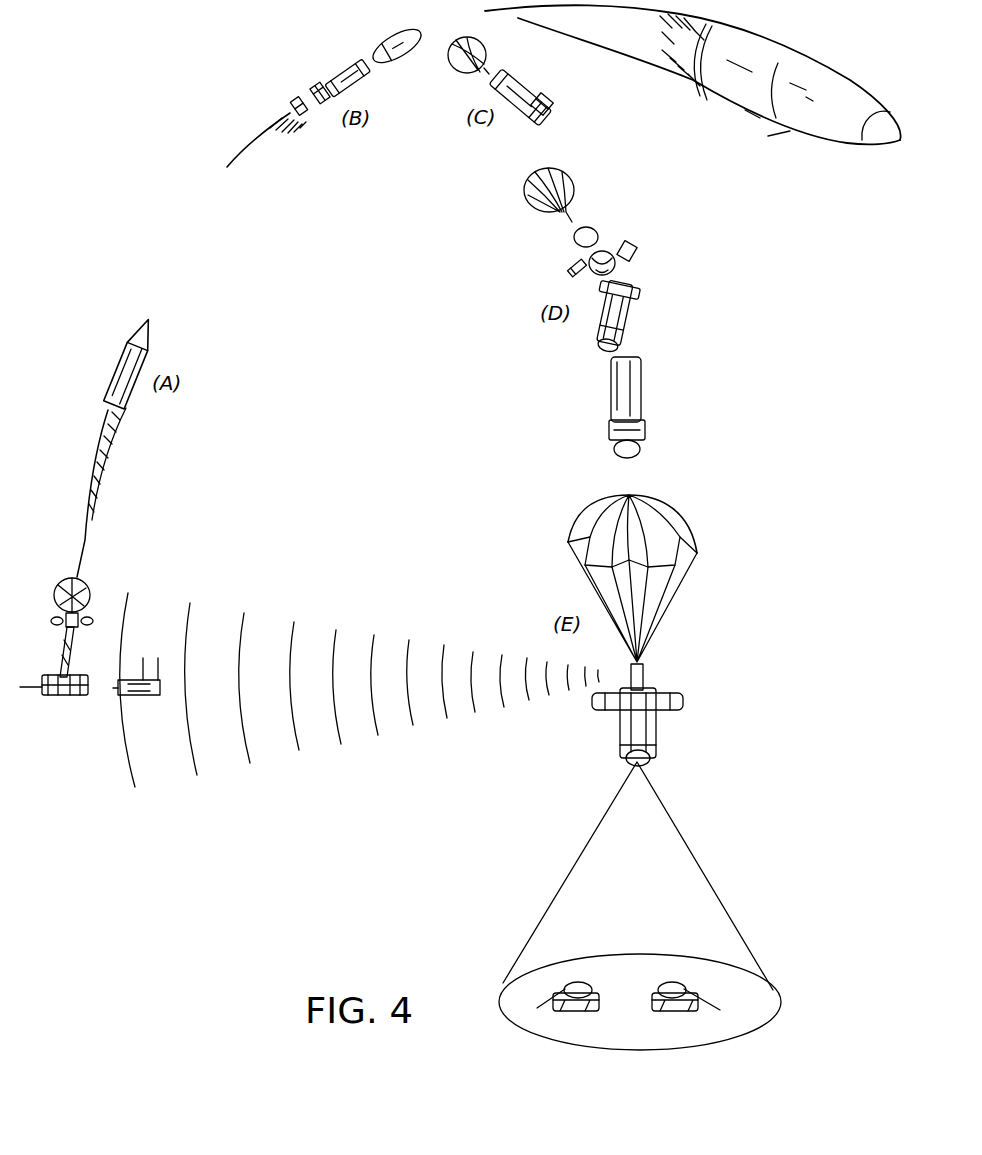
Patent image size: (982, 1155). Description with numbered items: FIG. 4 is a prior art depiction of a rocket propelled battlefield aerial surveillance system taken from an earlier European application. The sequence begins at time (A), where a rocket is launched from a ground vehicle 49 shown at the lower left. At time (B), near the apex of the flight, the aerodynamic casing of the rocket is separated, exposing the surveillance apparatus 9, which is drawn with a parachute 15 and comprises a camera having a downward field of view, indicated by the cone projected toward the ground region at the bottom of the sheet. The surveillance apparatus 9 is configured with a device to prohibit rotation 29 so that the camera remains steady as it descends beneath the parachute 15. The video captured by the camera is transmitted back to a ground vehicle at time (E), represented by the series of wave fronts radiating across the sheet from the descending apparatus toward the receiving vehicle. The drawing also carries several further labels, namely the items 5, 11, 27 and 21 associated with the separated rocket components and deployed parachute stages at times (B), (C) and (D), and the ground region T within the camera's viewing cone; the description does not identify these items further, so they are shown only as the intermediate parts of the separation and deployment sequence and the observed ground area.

The tail section 5 is at (296, 98).
The surveillance apparatus 9 is at (353, 66).
The parachute bundle 11 is at (487, 52).
The release mechanism 27 is at (544, 103).
The transmitter unit 21 is at (636, 314).
The parachute 15 is at (701, 551).
The device to prohibit rotation 29 is at (686, 698).
The ground vehicle 49 is at (50, 694).
The target area T is at (731, 1026).